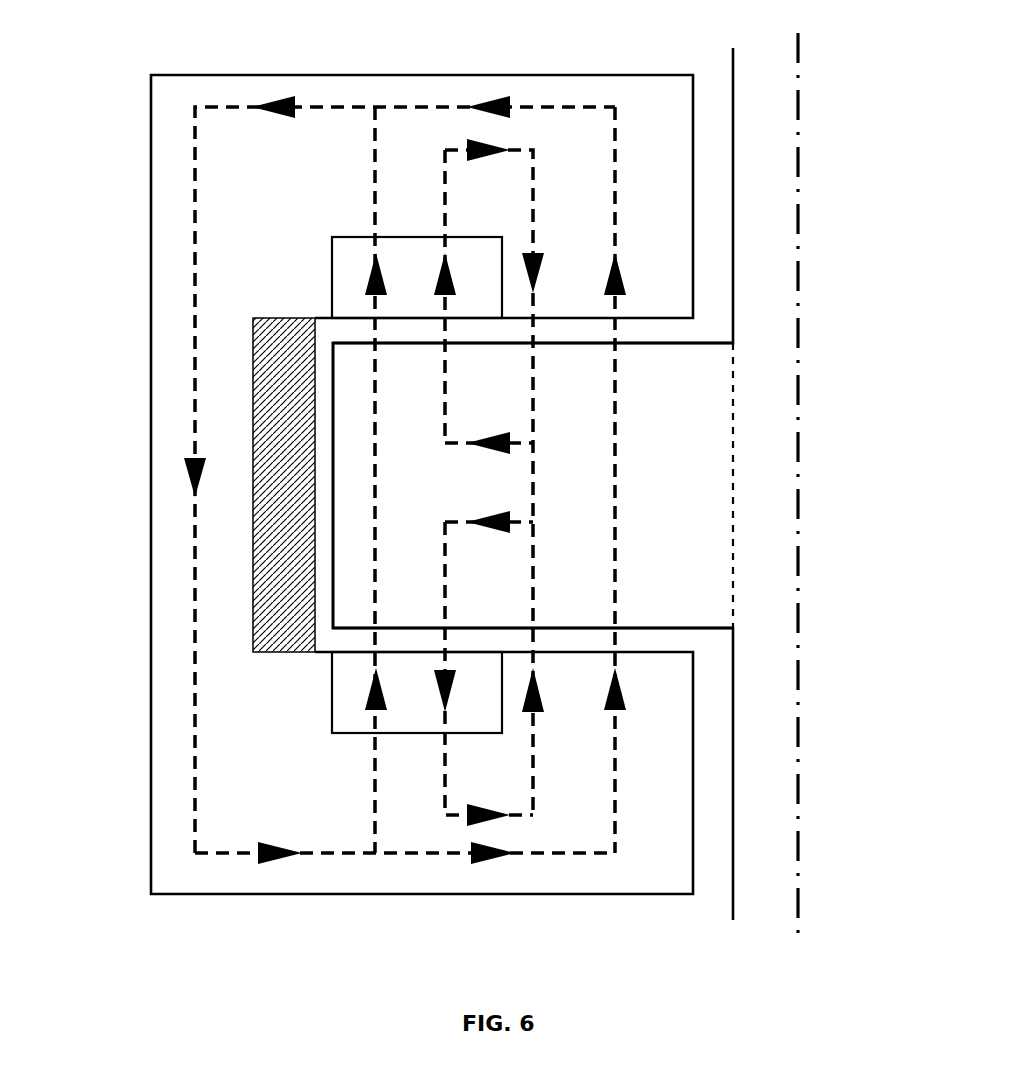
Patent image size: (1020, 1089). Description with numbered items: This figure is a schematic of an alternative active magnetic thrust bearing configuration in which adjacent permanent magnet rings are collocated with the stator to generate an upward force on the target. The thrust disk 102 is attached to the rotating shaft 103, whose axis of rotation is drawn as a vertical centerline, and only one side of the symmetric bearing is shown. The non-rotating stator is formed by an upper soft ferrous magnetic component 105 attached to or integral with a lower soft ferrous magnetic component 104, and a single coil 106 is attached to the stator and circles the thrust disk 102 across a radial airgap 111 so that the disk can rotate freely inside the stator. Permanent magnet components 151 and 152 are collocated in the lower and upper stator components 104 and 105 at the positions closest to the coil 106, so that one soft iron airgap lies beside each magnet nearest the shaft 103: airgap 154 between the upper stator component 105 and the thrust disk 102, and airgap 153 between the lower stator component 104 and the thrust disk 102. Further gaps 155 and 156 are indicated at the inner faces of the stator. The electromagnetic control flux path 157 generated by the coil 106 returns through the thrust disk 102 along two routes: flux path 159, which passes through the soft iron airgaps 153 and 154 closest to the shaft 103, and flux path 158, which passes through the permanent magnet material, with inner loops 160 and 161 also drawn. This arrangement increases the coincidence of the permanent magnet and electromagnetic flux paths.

The thrust disk 102 is at (700, 455).
The shaft 103 is at (820, 485).
The lower soft ferrous magnetic component 104 is at (407, 885).
The upper soft ferrous magnetic component 105 is at (418, 83).
The coil 106 is at (103, 157).
The radial airgap 111 is at (322, 515).
The permanent magnet component 151 is at (348, 705).
The permanent magnet component 152 is at (345, 262).
The airgap 153 is at (562, 636).
The airgap 154 is at (563, 330).
The lower left air gap 155 is at (400, 636).
The upper left air gap 156 is at (400, 322).
The electromagnetic control flux path 157 is at (193, 298).
The flux path 158 is at (373, 192).
The flux path 159 is at (615, 177).
The lower inner flux loop 160 is at (535, 750).
The upper inner flux loop 161 is at (535, 177).